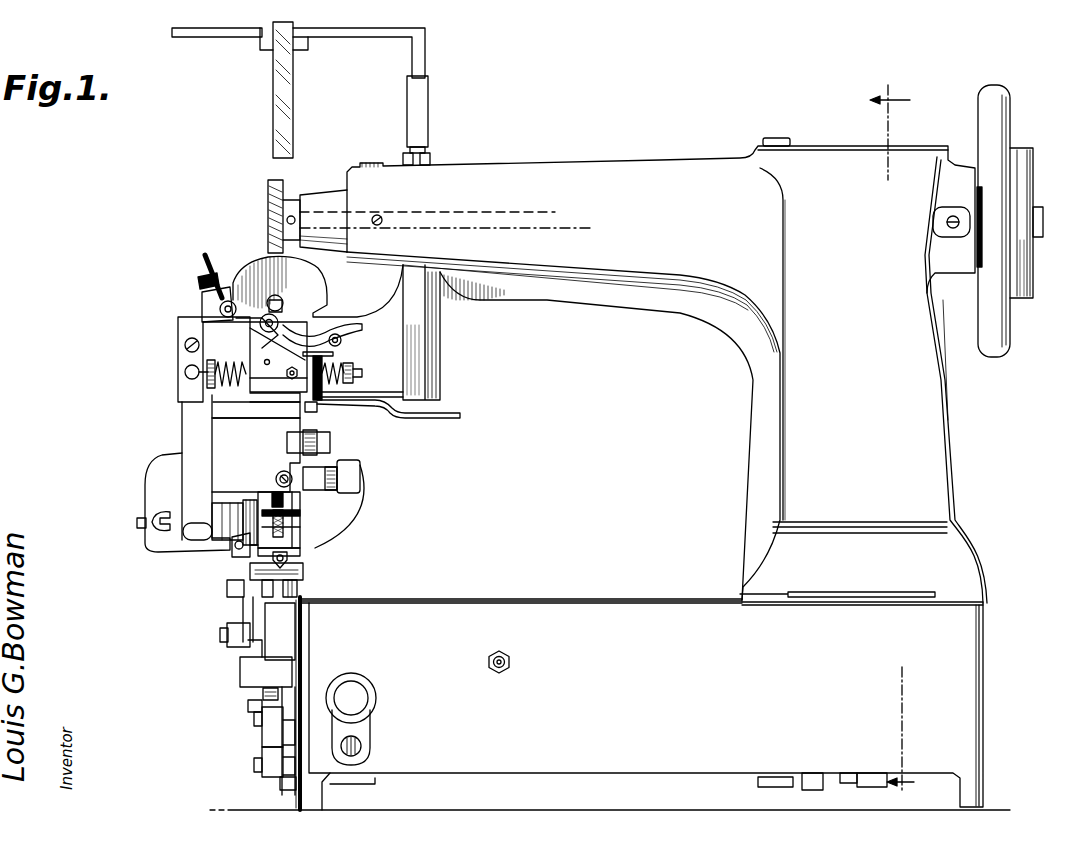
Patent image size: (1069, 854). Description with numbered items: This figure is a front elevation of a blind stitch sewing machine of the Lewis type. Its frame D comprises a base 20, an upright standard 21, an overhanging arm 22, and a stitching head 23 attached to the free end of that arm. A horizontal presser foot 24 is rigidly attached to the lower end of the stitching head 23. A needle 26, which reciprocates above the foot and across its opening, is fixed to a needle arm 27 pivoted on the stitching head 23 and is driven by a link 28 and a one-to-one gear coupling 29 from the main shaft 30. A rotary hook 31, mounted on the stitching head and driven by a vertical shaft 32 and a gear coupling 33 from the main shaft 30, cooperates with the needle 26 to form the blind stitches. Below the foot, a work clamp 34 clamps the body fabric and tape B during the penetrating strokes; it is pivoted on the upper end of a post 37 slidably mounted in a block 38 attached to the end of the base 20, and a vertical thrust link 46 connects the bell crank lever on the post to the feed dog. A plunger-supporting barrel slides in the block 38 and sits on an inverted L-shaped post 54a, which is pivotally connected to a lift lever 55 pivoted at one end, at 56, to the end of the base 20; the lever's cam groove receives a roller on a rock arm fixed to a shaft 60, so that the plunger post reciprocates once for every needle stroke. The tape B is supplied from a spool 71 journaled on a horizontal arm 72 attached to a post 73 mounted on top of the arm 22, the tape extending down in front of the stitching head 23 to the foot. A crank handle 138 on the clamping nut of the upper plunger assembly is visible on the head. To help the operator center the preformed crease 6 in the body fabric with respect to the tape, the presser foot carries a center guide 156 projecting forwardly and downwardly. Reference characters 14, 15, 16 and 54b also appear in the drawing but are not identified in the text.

The preformed crease 6 is at (892, 437).
The presser foot 14 is at (305, 535).
The presser bar clamp 15 is at (305, 525).
The presser foot lifter 16 is at (286, 520).
The base 20 is at (448, 607).
The standard 21 is at (800, 344).
The overhanging arm 22 is at (643, 371).
The stitching head 23 is at (190, 415).
The presser foot 24 is at (258, 552).
The needle 26 is at (313, 518).
The needle arm 27 is at (325, 472).
The link 28 is at (180, 325).
The gear coupling 29 is at (266, 210).
The main shaft 30 is at (436, 212).
The rotary hook 31 is at (247, 506).
The vertical shaft 32 is at (203, 307).
The gear coupling 33 is at (198, 280).
The work clamp 34 is at (303, 568).
The post 37 is at (298, 590).
The block 38 is at (286, 628).
The vertical thrust link 46 is at (242, 610).
The inverted L-shaped post 54a is at (262, 705).
The adjusting nut 54b is at (262, 692).
The lift lever 55 is at (265, 750).
The pivot 56 is at (258, 770).
The shaft 60 is at (285, 792).
The spool 71 is at (258, 52).
The horizontal arm 72 is at (224, 30).
The post 73 is at (430, 124).
The crank handle 138 is at (392, 403).
The center guide 156 is at (265, 562).
The tape B is at (272, 100).
The frame D is at (549, 596).